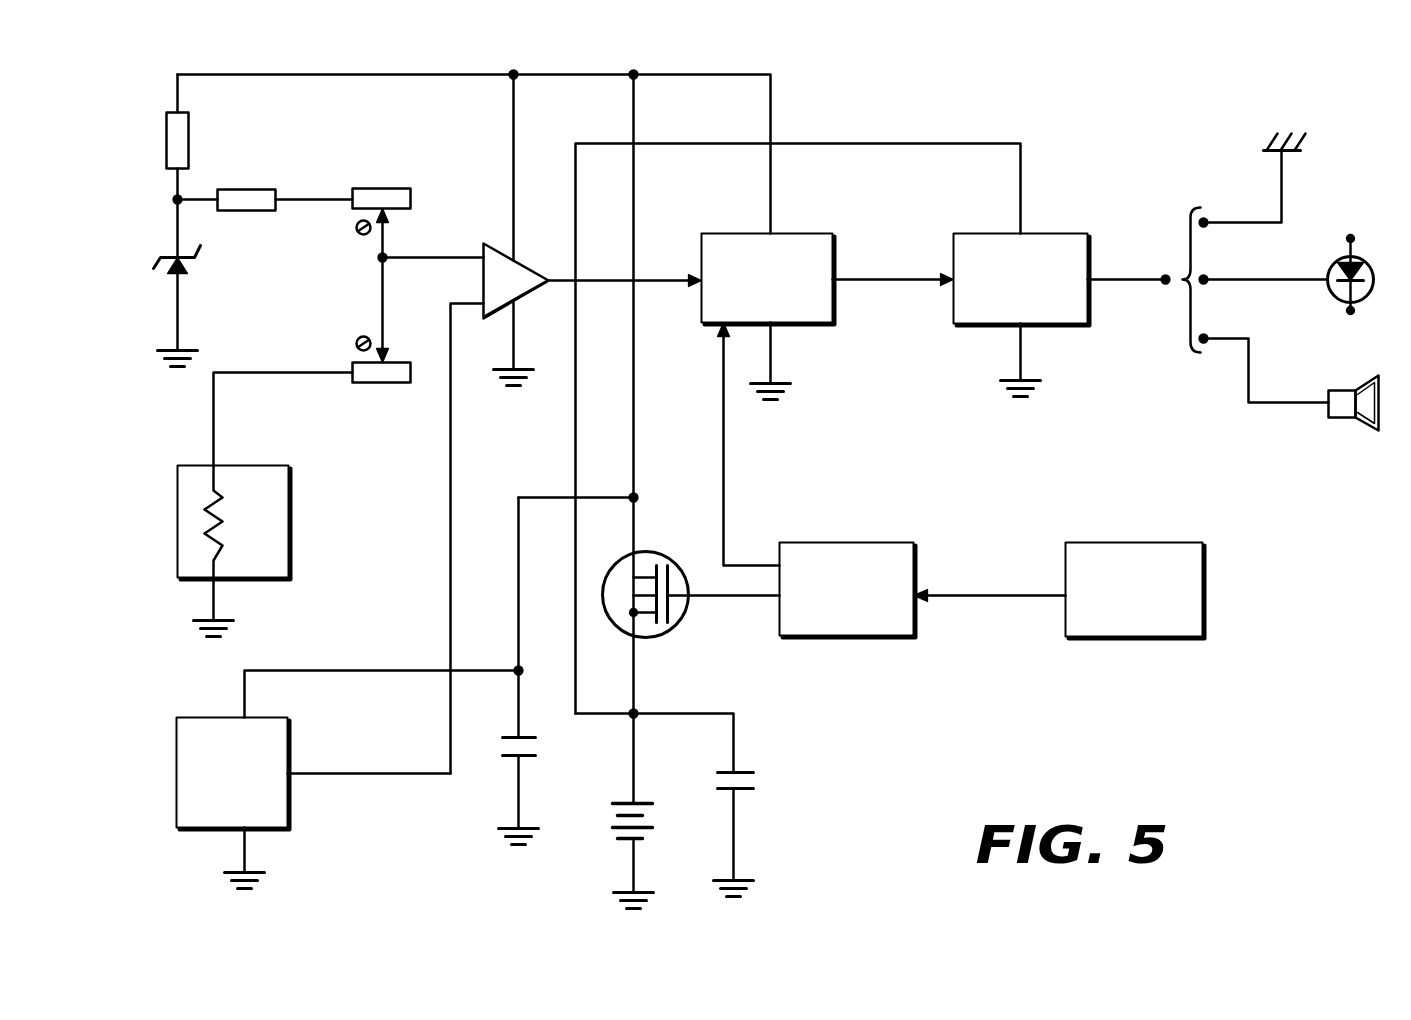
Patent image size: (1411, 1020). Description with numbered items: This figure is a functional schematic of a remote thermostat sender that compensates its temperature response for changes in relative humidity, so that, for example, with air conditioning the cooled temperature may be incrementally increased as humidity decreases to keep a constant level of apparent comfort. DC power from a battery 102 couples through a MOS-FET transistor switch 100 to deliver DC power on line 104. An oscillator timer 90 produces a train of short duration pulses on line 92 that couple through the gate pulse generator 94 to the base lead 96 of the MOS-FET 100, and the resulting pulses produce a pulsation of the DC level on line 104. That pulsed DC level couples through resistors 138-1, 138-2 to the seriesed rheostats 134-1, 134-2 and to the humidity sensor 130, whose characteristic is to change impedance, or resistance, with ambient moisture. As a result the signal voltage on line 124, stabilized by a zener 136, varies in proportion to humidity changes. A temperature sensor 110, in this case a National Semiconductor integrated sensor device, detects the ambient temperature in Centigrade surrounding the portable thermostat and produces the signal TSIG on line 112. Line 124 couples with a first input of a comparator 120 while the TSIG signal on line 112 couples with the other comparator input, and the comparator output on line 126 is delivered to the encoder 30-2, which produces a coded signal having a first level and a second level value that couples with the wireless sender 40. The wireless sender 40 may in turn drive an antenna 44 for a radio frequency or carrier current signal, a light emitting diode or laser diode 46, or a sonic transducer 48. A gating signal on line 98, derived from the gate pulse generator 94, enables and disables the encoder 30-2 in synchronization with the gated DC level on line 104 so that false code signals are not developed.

The encoder 30-2 is at (796, 230).
The wireless sender 40 is at (1069, 231).
The antenna 44 is at (1291, 153).
The light emitting diode or laser diode 46 is at (1331, 292).
The sonic transducer 48 is at (1338, 421).
The oscillator timer 90 is at (1156, 540).
The oscillator timer output line 92 is at (1005, 592).
The gate pulse generator 94 is at (891, 540).
The base lead 96 is at (720, 598).
The gating signal line 98 is at (727, 510).
The MOS-FET transistor switch 100 is at (664, 551).
The battery 102 is at (604, 815).
The DC power line 104 is at (772, 106).
The temperature sensor 110 is at (192, 715).
The temperature signal line 112 is at (364, 771).
The comparator 120 is at (540, 261).
The signal line 124 is at (450, 252).
The comparator output line 126 is at (663, 275).
The humidity sensor 130 is at (282, 462).
The rheostat 134-1 is at (343, 365).
The rheostat 134-2 is at (407, 185).
The zener 136 is at (150, 260).
The resistor 138-1 is at (191, 141).
The resistor 138-2 is at (277, 182).